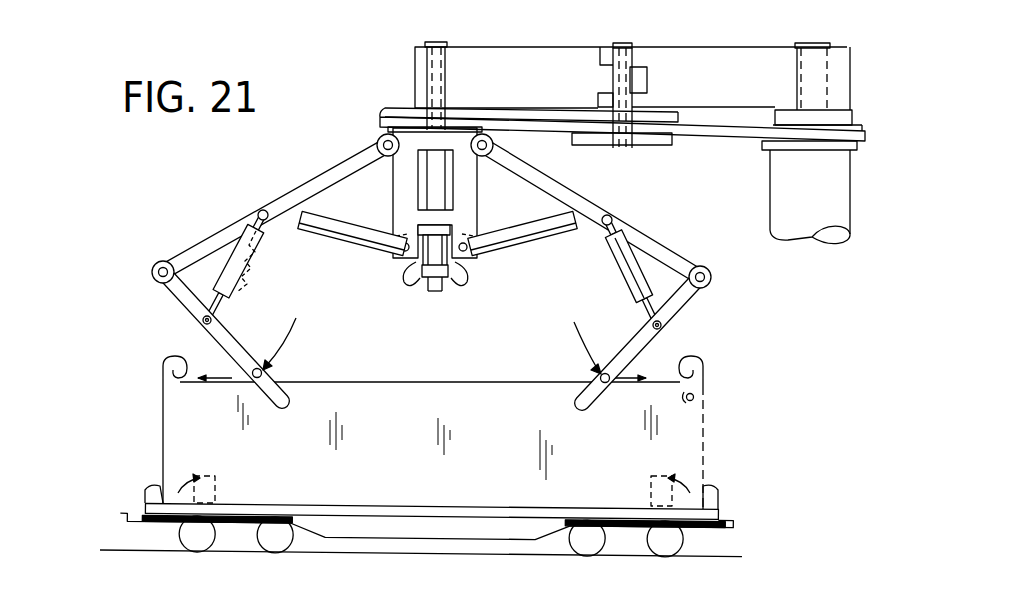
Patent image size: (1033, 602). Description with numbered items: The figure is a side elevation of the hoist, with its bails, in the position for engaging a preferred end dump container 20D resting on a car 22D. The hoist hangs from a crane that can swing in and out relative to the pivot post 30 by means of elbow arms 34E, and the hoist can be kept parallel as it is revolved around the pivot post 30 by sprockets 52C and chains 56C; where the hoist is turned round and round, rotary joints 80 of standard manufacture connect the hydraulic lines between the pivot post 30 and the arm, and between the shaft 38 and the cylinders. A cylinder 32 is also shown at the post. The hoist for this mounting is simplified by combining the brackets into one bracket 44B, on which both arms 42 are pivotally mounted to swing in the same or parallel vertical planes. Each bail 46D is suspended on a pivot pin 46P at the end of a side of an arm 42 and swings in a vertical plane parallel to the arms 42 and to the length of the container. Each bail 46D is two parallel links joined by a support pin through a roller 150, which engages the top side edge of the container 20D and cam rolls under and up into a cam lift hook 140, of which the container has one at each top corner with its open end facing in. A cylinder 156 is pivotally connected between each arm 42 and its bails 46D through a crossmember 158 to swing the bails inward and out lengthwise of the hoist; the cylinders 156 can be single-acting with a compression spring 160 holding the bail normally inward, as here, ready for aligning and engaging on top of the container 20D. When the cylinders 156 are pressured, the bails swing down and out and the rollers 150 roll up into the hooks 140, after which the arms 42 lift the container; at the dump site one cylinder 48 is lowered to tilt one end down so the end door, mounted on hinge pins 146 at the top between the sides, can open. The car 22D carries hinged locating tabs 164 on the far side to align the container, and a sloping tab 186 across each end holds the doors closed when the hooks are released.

The pivot post 30 is at (840, 49).
The hydraulic cylinder 32 is at (770, 218).
The elbow arm 34E is at (414, 78).
The sprocket 52C is at (387, 108).
The chain 56C is at (503, 118).
The arm 42 is at (346, 161).
The bracket 44B is at (395, 208).
The pivot pin 46P is at (158, 266).
The bail 46D is at (198, 322).
The cylinder 48 is at (340, 237).
The shaft 38 is at (421, 284).
The rotary joint 80 is at (451, 284).
The cylinder 156 is at (250, 247).
The compression spring 160 is at (240, 287).
The crossmember 158 is at (214, 322).
The roller 150 is at (264, 371).
The cam lift hook 140 is at (162, 366).
The hinge pin 146 is at (697, 401).
The container 20D is at (160, 446).
The sloping tab 186 is at (146, 490).
The car 22D is at (144, 513).
The locating tab 164 is at (218, 486).